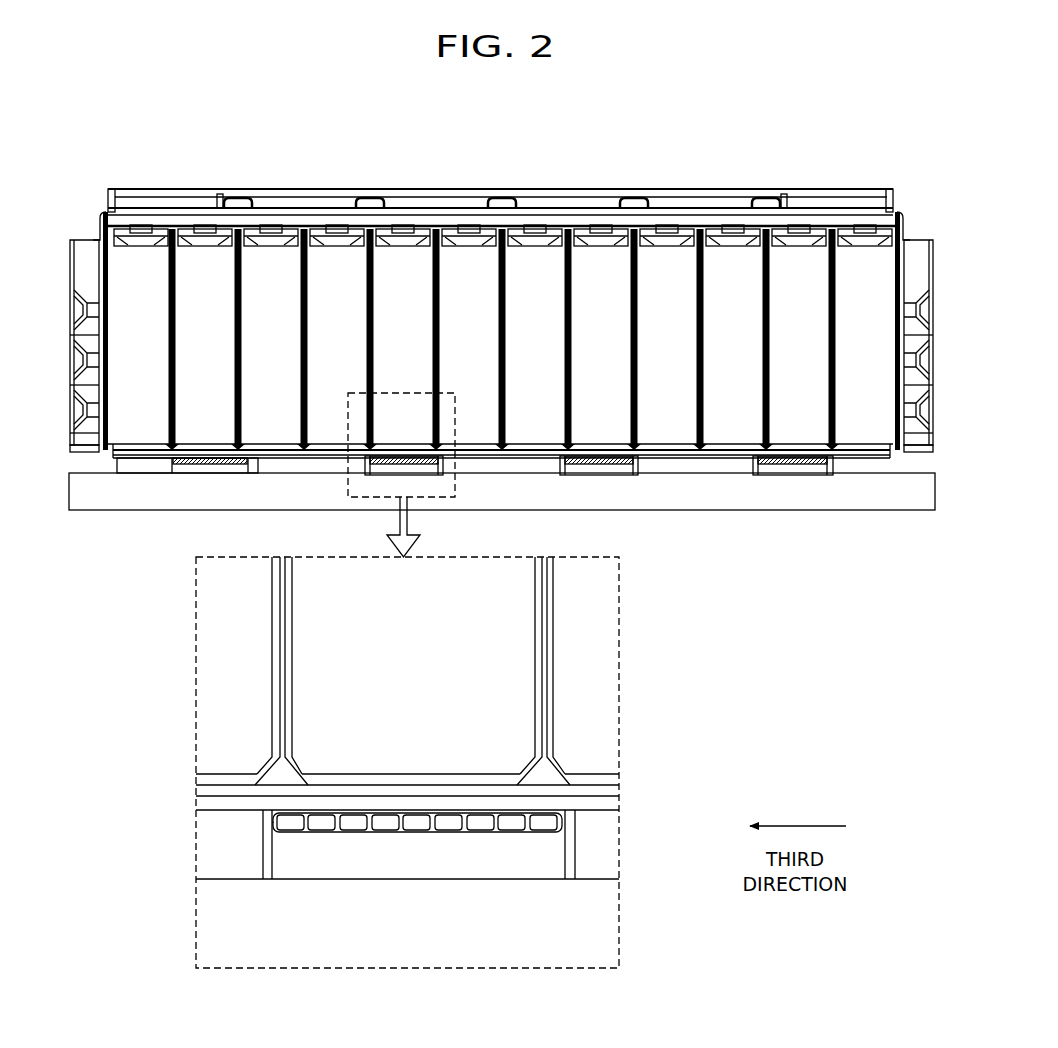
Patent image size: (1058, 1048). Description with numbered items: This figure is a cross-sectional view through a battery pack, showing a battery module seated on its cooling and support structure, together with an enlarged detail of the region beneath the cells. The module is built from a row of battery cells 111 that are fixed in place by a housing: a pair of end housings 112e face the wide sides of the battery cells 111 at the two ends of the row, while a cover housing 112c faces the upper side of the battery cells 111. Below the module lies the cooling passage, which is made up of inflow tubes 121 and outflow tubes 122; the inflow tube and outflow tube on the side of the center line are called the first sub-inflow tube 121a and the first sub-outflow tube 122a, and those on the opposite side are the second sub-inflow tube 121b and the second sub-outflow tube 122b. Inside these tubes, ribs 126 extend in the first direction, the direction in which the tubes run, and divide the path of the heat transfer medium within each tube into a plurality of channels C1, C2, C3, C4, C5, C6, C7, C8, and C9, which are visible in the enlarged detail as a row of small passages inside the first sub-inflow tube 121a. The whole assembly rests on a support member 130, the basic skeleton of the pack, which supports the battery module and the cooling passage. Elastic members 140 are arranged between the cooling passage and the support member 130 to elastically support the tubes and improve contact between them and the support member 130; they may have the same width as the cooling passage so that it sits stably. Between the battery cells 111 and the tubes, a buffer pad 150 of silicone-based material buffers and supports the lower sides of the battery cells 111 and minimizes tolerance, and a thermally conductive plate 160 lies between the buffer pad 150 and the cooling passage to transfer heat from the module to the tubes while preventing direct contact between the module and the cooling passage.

The battery cell 111 is at (862, 265).
The cover housing 112c is at (696, 198).
The end housing 112e is at (83, 252).
The inflow tube 121 is at (390, 654).
The first sub-inflow tube 121a is at (413, 466).
The second sub-inflow tube 121b is at (610, 465).
The outflow tube 122 is at (508, 504).
The first sub-outflow tube 122a is at (192, 465).
The second sub-outflow tube 122b is at (807, 464).
The rib 126 is at (533, 814).
The support member 130 is at (215, 921).
The elastic member 140 is at (227, 467).
The buffer pad 150 is at (210, 790).
The thermally conductive plate 160 is at (210, 806).
The channel C1 is at (290, 831).
The channel C2 is at (322, 831).
The channel C3 is at (354, 831).
The channel C4 is at (385, 831).
The channel C5 is at (417, 831).
The channel C6 is at (448, 831).
The channel C7 is at (480, 831).
The channel C8 is at (512, 831).
The channel C9 is at (543, 831).